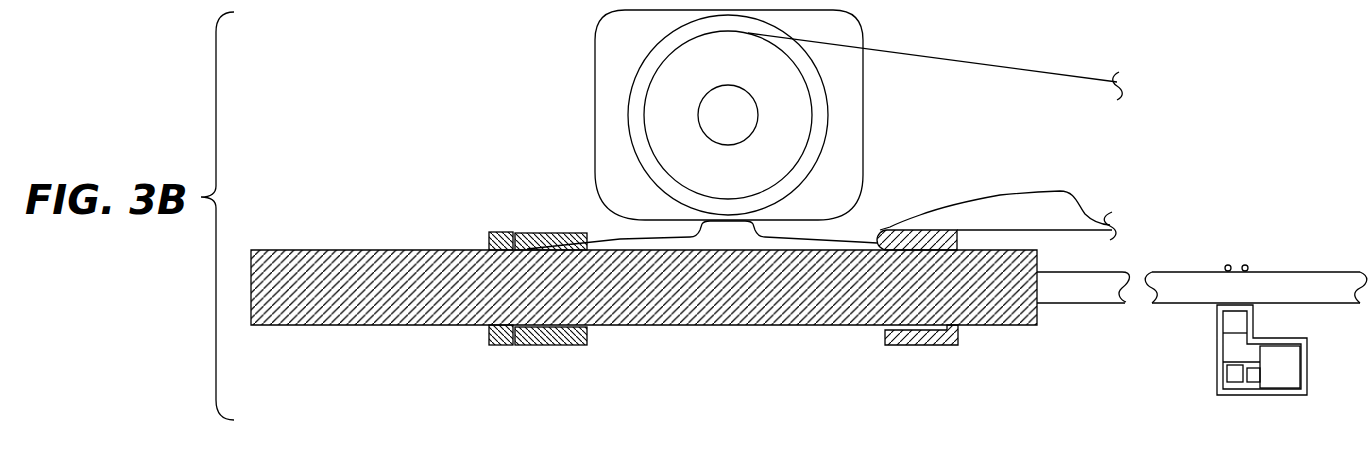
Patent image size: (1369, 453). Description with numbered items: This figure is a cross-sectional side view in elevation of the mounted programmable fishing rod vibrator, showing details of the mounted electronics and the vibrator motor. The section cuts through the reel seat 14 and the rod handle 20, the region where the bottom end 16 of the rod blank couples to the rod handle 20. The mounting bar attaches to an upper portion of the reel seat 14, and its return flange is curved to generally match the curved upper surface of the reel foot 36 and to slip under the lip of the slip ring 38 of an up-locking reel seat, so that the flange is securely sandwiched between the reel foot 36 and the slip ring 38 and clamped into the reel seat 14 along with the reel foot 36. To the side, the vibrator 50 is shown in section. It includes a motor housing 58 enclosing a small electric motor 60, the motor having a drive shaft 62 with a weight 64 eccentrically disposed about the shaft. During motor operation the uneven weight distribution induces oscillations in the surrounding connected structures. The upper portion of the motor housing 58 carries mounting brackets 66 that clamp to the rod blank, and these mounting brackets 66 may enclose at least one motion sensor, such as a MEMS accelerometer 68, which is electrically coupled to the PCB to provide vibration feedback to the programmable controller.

The reel seat 14 is at (738, 325).
The bottom end 16 is at (1060, 303).
The rod handle 20 is at (325, 325).
The reel foot 36 is at (858, 242).
The slip ring 38 is at (930, 345).
The vibrator 50 is at (1254, 332).
The motor housing 58 is at (1308, 375).
The electric motor 60 is at (1282, 367).
The drive shaft 62 is at (1253, 360).
The weight 64 is at (1235, 385).
The mounting brackets 66 is at (1248, 267).
The MEMS accelerometer 68 is at (1230, 322).